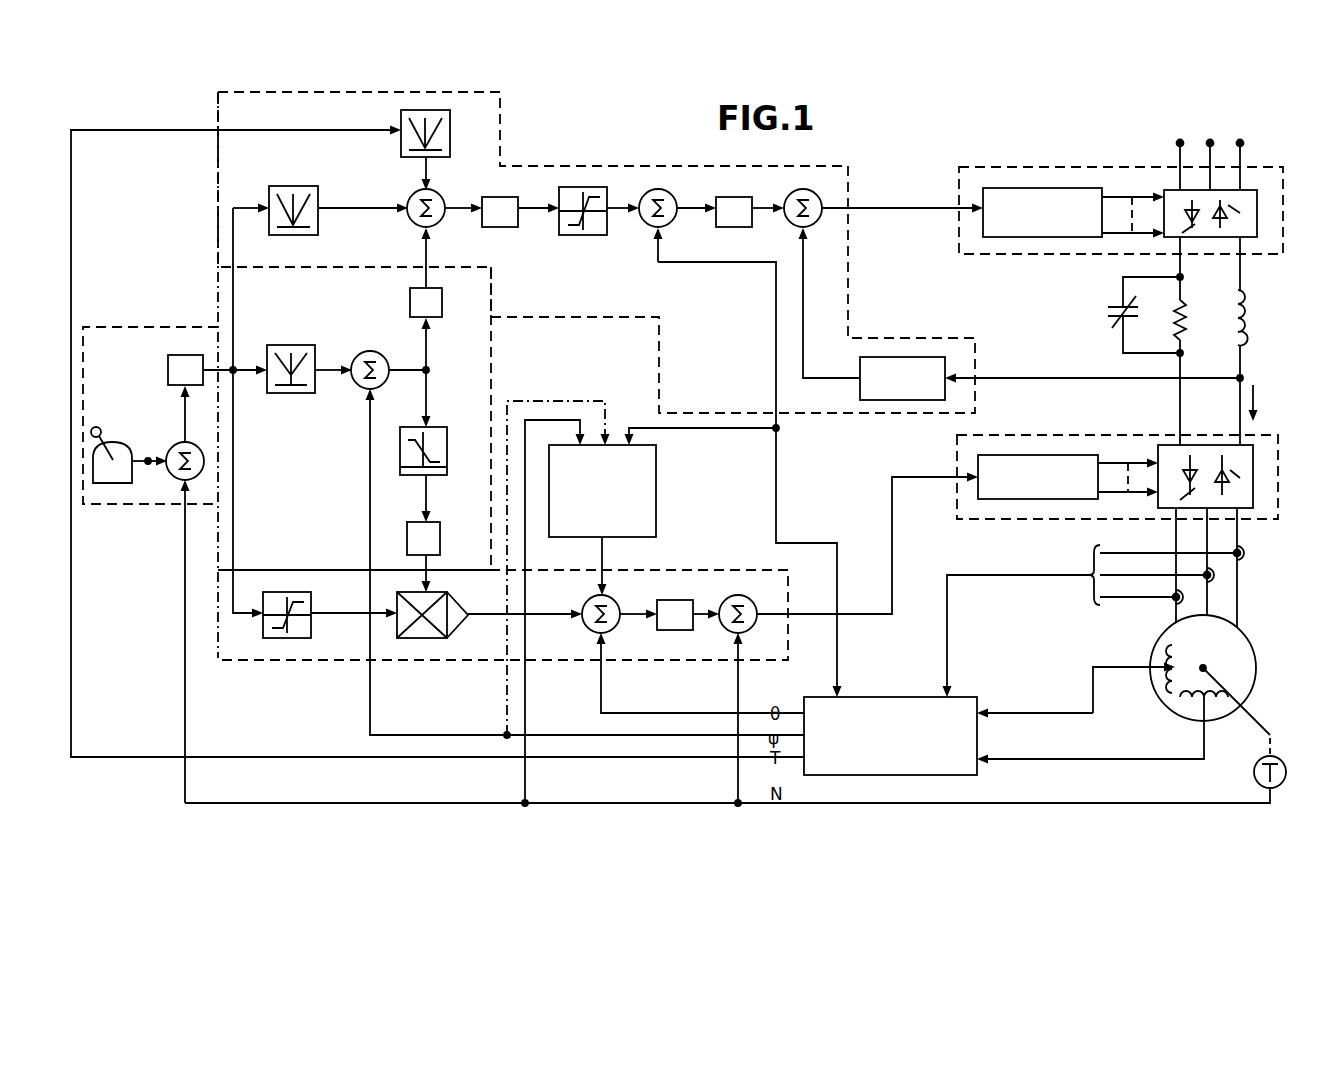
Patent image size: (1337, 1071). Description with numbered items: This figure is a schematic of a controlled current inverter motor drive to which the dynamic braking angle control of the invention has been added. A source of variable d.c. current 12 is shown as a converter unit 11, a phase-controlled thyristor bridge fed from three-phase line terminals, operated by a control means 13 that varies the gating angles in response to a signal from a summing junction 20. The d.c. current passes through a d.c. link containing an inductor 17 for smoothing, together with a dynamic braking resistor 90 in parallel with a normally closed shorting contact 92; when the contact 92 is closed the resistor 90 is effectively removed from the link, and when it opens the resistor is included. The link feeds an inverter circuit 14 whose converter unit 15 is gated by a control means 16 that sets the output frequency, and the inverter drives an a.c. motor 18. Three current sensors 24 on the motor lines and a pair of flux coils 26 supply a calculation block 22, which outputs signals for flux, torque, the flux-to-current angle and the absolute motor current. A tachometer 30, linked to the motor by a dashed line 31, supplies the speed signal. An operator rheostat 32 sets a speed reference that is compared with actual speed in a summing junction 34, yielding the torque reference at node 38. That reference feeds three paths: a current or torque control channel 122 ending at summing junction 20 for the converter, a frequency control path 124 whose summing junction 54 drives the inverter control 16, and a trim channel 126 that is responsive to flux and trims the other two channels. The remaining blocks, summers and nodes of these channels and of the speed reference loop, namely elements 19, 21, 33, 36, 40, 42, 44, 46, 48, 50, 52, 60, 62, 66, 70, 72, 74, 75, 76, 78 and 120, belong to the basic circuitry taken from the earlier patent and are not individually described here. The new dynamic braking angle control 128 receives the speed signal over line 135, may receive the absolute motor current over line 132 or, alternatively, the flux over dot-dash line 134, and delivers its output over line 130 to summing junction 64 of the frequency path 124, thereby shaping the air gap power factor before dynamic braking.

The converter unit 11 is at (1258, 190).
The source of variable d.c. current 12 is at (1033, 167).
The control means 13 is at (1070, 188).
The inverter circuit 14 is at (1028, 435).
The converter unit 15 is at (1210, 445).
The control means 16 is at (1065, 455).
The inductor 17 is at (1252, 323).
The a.c. motor 18 is at (1255, 660).
The filter 19 is at (860, 370).
The summing junction 20 is at (817, 195).
The summing junction input line 21 is at (766, 206).
The calculation block 22 is at (975, 697).
The current sensors 24 is at (1245, 580).
The flux coils 26 is at (1165, 702).
The tachometer 30 is at (1254, 780).
The dashed line 31 is at (1262, 728).
The rheostat 32 is at (115, 442).
The speed reference signal node 33 is at (148, 464).
The summing junction 34 is at (175, 445).
The gain block G1 36 is at (168, 368).
The node 38 is at (236, 367).
The absolute value block 40 is at (300, 186).
The summing junction 42 is at (438, 225).
The absolute value block 44 is at (450, 125).
The gain block G2 46 is at (500, 227).
The limiter block 48 is at (580, 235).
The summing junction 50 is at (668, 180).
The gain block G3 52 is at (735, 227).
The summing junction 54 is at (752, 600).
The limiter block 60 is at (311, 632).
The multiplier 62 is at (460, 628).
The summing junction 64 is at (618, 600).
The gain block G4 66 is at (668, 630).
The function block 70 is at (292, 345).
The summing junction 72 is at (378, 353).
The gain block G5 74 is at (442, 300).
The signal node 75 is at (428, 368).
The function block 76 is at (447, 430).
The gain block G6 78 is at (440, 530).
The dynamic braking resistor 90 is at (1190, 326).
The shorting contact 92 is at (1108, 318).
The speed regulator section 120 is at (140, 327).
The current or torque control channel 122 is at (500, 150).
The frequency control path 124 is at (265, 660).
The trim channel 126 is at (491, 365).
The dynamic braking angle control 128 is at (656, 518).
The line 130 is at (604, 555).
The line 132 is at (740, 430).
The dot-dash line 134 is at (505, 700).
The line 135 is at (525, 705).